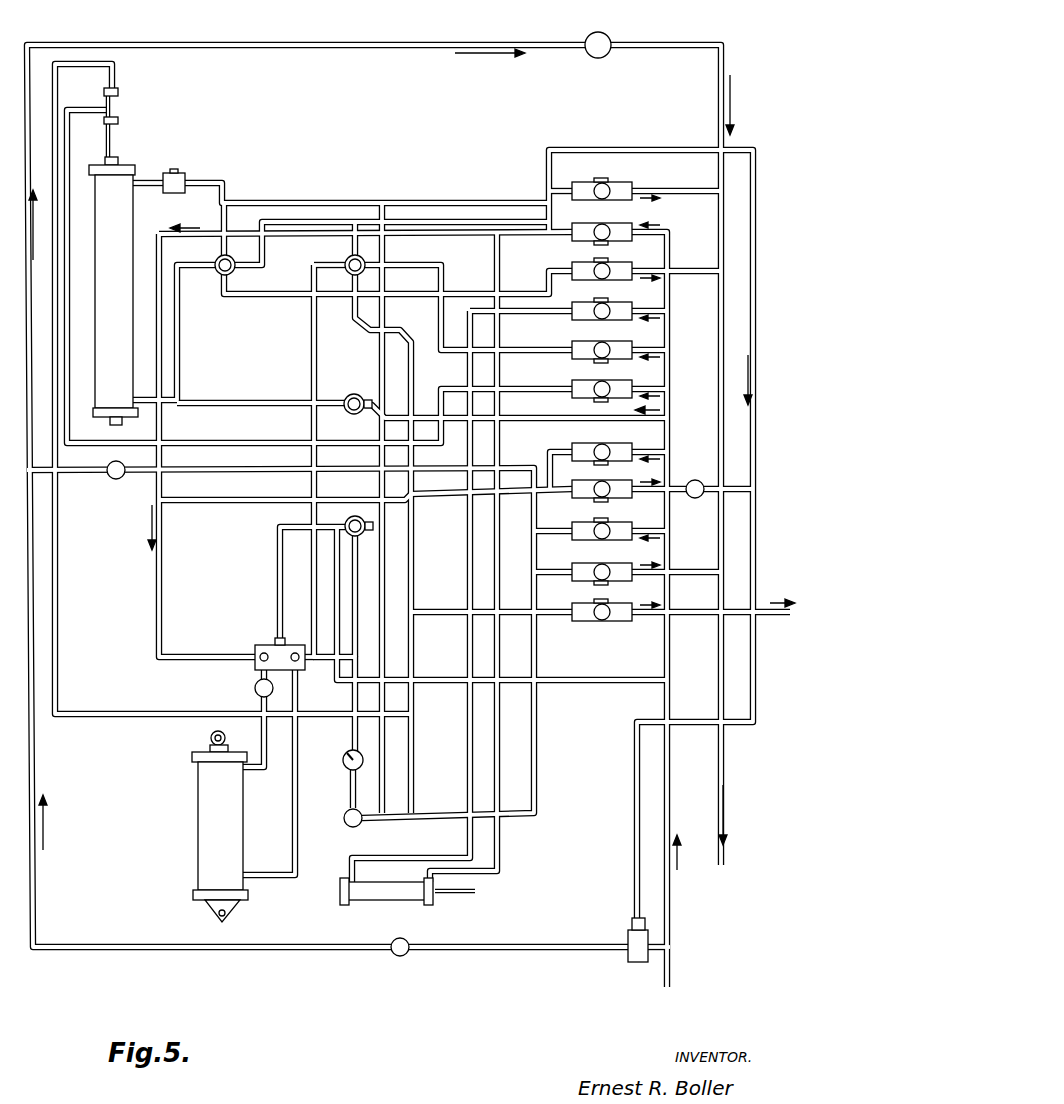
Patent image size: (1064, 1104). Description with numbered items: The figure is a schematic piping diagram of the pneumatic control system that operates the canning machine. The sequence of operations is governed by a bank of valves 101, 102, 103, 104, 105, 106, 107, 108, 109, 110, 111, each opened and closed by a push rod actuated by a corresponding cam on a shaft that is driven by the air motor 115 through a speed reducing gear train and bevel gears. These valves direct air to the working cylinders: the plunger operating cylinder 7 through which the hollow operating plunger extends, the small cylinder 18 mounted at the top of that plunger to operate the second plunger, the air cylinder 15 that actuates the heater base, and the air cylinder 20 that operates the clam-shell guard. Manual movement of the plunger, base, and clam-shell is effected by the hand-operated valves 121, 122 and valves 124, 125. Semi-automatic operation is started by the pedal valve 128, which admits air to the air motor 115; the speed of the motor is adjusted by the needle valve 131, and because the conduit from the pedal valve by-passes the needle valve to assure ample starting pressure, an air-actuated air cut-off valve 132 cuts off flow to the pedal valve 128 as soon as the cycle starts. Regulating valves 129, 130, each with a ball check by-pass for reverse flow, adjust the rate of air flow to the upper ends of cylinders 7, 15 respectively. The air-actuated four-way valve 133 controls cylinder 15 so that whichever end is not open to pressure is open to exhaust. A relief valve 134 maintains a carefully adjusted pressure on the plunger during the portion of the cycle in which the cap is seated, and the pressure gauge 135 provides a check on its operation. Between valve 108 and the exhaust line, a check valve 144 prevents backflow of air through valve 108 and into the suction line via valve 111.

The plunger operating cylinder 7 is at (119, 306).
The air cylinder 15 is at (228, 834).
The small cylinder 18 is at (118, 106).
The air cylinder 20 is at (385, 900).
The valve 101 is at (612, 182).
The valve 102 is at (612, 223).
The valve 103 is at (612, 262).
The valve 104 is at (612, 302).
The valve 105 is at (612, 341).
The valve 106 is at (612, 380).
The valve 107 is at (612, 443).
The valve 108 is at (612, 480).
The valve 109 is at (612, 522).
The valve 110 is at (612, 563).
The valve 111 is at (612, 603).
The air motor 115 is at (612, 35).
The valve 121 is at (233, 272).
The valve 122 is at (345, 258).
The valve 124 is at (352, 394).
The valve 125 is at (355, 516).
The pedal valve 128 is at (399, 956).
The regulating valve 129 is at (185, 173).
The regulating valve 130 is at (255, 688).
The needle valve 131 is at (110, 479).
The air cut-off valve 132 is at (628, 955).
The four-way valve 133 is at (270, 645).
The relief valve 134 is at (358, 826).
The pressure gauge 135 is at (345, 753).
The check valve 144 is at (695, 498).